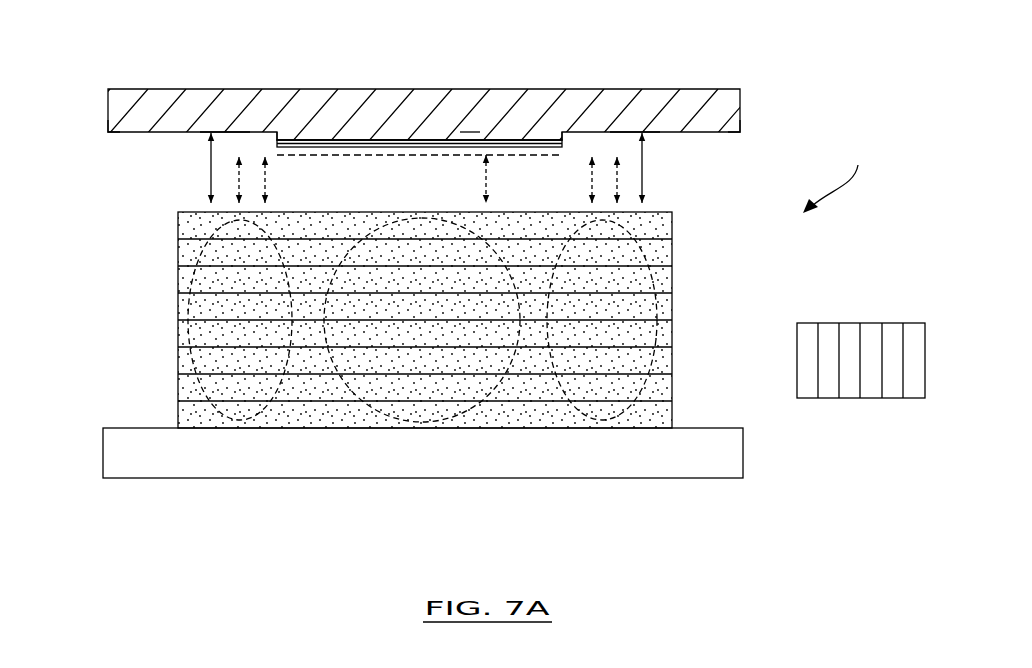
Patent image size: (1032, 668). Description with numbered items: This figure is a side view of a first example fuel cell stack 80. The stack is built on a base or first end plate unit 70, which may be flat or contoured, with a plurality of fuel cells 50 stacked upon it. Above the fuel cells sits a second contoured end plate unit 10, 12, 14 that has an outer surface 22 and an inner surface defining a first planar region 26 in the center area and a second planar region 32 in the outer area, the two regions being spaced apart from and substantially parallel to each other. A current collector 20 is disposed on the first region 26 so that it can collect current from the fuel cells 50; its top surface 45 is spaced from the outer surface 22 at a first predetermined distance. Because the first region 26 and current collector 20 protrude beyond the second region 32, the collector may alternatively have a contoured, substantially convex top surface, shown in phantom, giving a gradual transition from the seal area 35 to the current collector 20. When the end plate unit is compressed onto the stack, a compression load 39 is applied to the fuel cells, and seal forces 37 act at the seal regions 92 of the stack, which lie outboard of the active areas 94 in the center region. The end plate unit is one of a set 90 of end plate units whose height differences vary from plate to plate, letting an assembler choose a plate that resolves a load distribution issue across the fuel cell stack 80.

The end plate unit 10 is at (428, 79).
The end plate unit (first embodiment) 12 is at (428, 79).
The end plate unit (first embodiment) 14 is at (428, 79).
The outer surface 22 is at (327, 89).
The second planar region 32 is at (108, 132).
The seal area 35 is at (221, 132).
The top surface of current collector 45 is at (397, 150).
The first planar region 26 is at (430, 143).
The current collector 20 is at (437, 155).
The seal forces 37 is at (211, 173).
The compression load 39 is at (240, 177).
The fuel cells 50 is at (347, 364).
The first end plate unit 70 is at (743, 452).
The fuel cell stack 80 is at (835, 176).
The set of end plate units 90 is at (872, 398).
The seal regions 92 is at (240, 425).
The active areas 94 is at (422, 425).